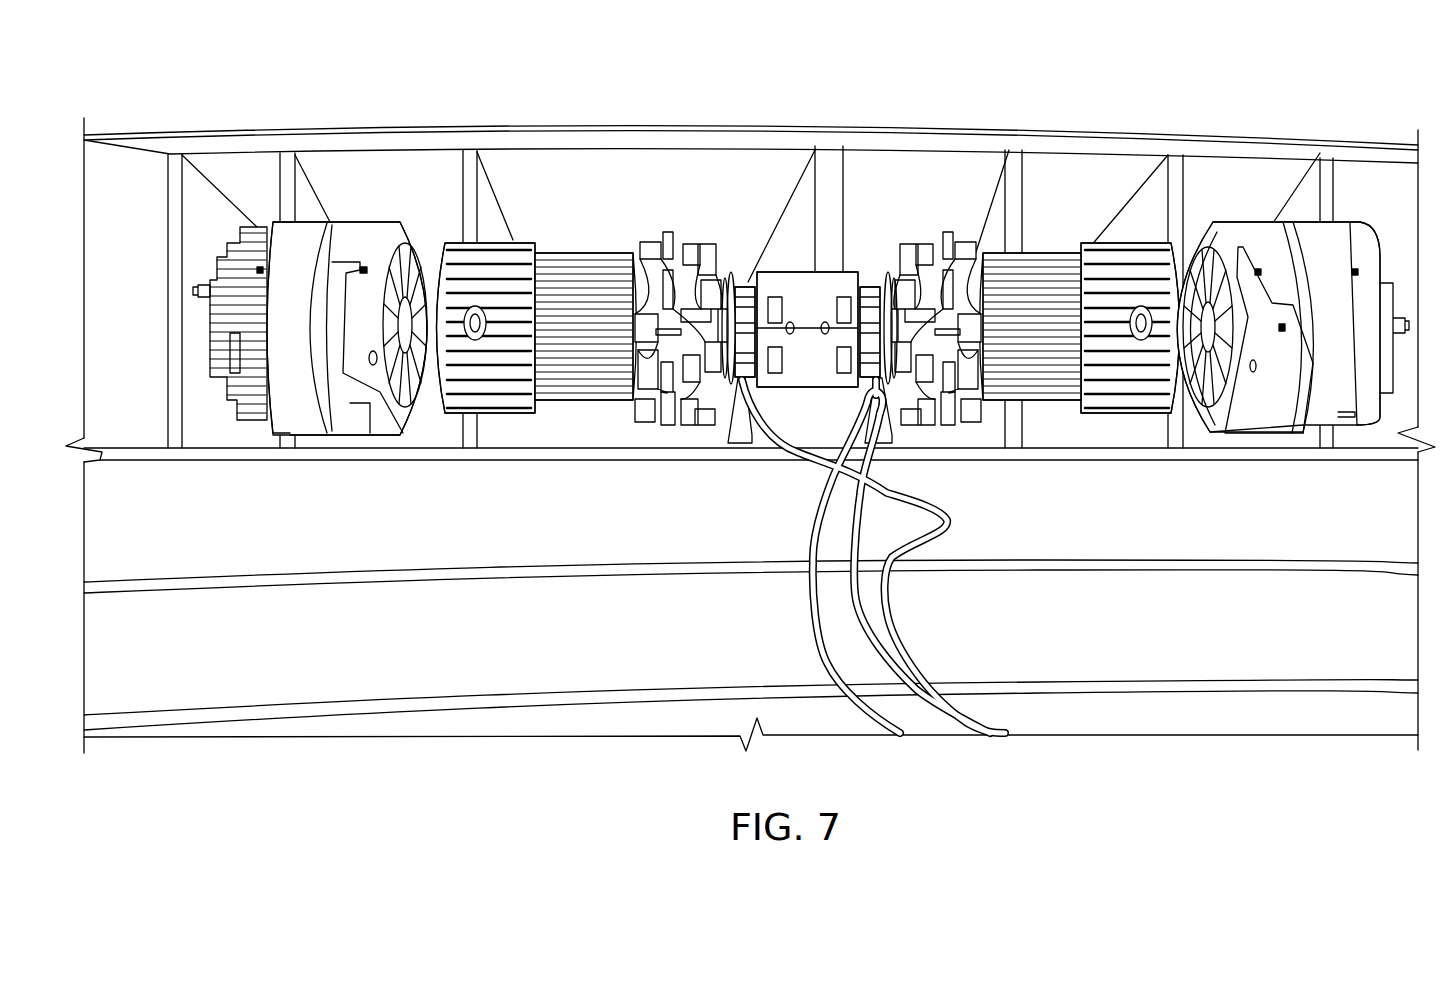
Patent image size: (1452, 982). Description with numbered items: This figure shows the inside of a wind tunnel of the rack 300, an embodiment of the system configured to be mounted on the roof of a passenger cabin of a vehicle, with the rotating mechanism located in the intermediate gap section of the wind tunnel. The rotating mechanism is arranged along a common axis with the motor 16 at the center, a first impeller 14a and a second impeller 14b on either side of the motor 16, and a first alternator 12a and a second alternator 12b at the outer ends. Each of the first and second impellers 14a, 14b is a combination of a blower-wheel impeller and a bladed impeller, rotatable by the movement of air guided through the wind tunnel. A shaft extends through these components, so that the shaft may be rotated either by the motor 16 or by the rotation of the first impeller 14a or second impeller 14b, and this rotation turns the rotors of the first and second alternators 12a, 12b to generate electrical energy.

The rack 300 is at (1258, 88).
The first alternator 12a is at (306, 416).
The second alternator 12b is at (1318, 443).
The first impeller 14a is at (579, 428).
The second impeller 14b is at (1038, 428).
The motor 16 is at (840, 262).